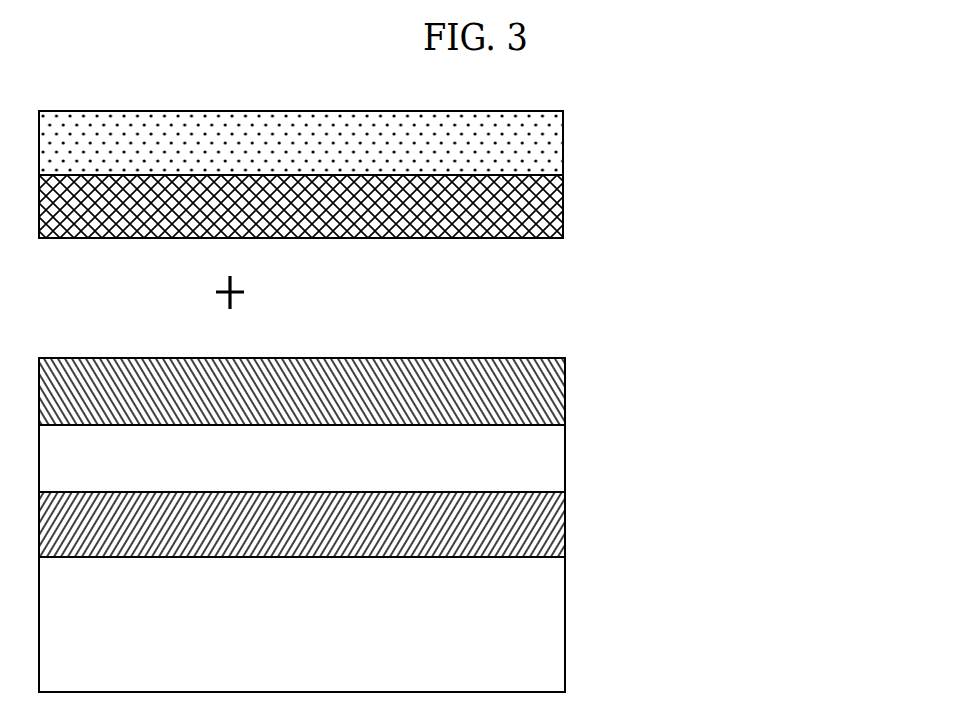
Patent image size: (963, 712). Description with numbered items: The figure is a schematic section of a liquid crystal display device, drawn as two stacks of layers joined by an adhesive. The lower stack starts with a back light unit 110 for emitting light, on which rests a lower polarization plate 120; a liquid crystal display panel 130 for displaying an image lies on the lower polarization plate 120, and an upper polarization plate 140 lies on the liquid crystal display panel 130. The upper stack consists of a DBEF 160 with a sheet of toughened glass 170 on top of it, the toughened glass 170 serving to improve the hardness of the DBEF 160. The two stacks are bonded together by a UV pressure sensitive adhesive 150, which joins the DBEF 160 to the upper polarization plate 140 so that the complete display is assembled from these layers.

The back light unit 110 is at (513, 652).
The lower polarization plate 120 is at (512, 542).
The liquid crystal display panel 130 is at (512, 462).
The upper polarization plate 140 is at (532, 380).
The UV pressure sensitive adhesive 150 is at (720, 293).
The DBEF 160 is at (540, 205).
The sheet of toughened glass 170 is at (512, 138).